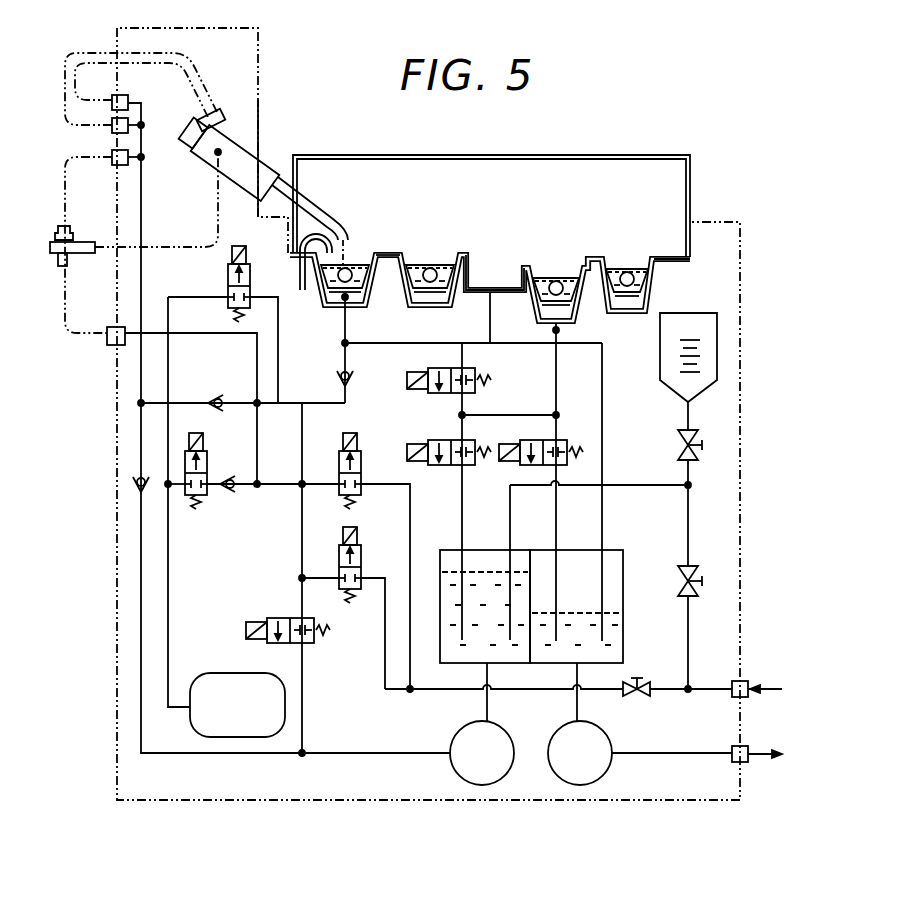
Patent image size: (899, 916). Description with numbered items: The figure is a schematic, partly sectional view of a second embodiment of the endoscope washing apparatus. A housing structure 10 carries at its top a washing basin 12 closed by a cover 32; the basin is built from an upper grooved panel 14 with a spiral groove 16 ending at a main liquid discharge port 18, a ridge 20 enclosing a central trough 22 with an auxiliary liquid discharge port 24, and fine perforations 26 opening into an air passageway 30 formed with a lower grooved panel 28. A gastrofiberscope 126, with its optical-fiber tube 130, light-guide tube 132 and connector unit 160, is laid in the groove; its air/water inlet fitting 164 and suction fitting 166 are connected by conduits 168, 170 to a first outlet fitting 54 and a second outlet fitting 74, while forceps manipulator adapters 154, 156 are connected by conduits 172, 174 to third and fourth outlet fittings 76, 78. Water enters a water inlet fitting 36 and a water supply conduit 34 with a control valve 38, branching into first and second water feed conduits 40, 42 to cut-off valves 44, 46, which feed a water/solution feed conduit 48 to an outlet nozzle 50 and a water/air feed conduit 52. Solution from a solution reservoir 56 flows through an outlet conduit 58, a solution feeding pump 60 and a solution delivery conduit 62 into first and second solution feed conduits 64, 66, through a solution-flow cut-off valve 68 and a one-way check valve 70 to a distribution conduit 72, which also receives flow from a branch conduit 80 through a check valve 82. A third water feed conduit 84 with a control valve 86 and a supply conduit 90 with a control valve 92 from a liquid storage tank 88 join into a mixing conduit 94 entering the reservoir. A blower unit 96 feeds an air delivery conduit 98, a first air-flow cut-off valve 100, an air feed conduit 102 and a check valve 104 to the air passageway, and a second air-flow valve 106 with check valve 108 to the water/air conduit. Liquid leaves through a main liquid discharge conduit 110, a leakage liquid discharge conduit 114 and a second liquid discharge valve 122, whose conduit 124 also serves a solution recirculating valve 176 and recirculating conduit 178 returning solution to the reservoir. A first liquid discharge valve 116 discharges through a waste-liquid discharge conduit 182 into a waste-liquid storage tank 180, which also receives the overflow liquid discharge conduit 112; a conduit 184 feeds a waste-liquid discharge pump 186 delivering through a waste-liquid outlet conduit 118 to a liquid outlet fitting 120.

The housing structure 10 is at (328, 800).
The washing basin 12 is at (606, 220).
The upper grooved panel 14 is at (682, 258).
The spiral groove 16 is at (416, 256).
The main liquid discharge port 18 is at (559, 330).
The ridge 20 is at (462, 255).
The central trough 22 is at (506, 288).
The auxiliary liquid discharge port 24 is at (483, 292).
The fine perforations 26 is at (410, 296).
The lower grooved panel 28 is at (343, 337).
The air passageway 30 is at (336, 304).
The cover 32 is at (589, 156).
The water supply conduit 34 is at (532, 690).
The water inlet fitting 36 is at (745, 682).
The manually-operated water-flow control valve 38 is at (636, 699).
The first water feed conduit 40 is at (384, 690).
The second water feed conduit 42 is at (410, 544).
The first solenoid-operated water-flow cut-off valve 44 is at (352, 598).
The second solenoid-operated water-flow cut-off valve 46 is at (361, 456).
The water/solution feed conduit 48 is at (300, 564).
The water/solution outlet nozzle 50 is at (288, 222).
The water/air feed conduit 52 is at (205, 336).
The first outlet fitting 54 is at (113, 347).
The solution reservoir 56 is at (443, 548).
The outlet conduit 58 is at (486, 716).
The solution feeding pump 60 is at (455, 768).
The solution delivery conduit 62 is at (356, 755).
The first solution feed conduit 64 is at (304, 700).
The second solution feed conduit 66 is at (195, 754).
The solenoid-operated solution-flow cut-off valve 68 is at (270, 617).
The one-way check valve 70 is at (133, 486).
The water/solution/air distribution conduit 72 is at (143, 212).
The second outlet fitting 74 is at (112, 160).
The third outlet fitting 76 is at (111, 127).
The fourth outlet fitting 78 is at (121, 96).
The branch conduit 80 is at (178, 403).
The one-way check valve 82 is at (219, 409).
The third water feed conduit 84 is at (689, 631).
The manually-operated water-flow control valve 86 is at (700, 578).
The liquid storage tank 88 is at (718, 347).
The supply conduit 90 is at (686, 406).
The manually-operated liquid-flow control valve 92 is at (679, 446).
The mixing conduit 94 is at (668, 488).
The blower unit 96 is at (225, 673).
The air delivery conduit 98 is at (170, 586).
The first solenoid-operated air-flow cut-off valve 100 is at (228, 278).
The air feed conduit 102 is at (278, 407).
The one-way check valve 104 is at (348, 382).
The second solenoid-operated air-flow cut-off valve 106 is at (206, 504).
The one-way check valve 108 is at (235, 490).
The main liquid discharge conduit 110 is at (556, 345).
The overflow liquid discharge conduit 112 is at (602, 386).
The leakage liquid discharge conduit 114 is at (346, 343).
The first solenoid-operated liquid discharge valve 116 is at (557, 442).
The waste-liquid outlet conduit 118 is at (657, 755).
The liquid outlet fitting 120 is at (746, 765).
The second solenoid-operated liquid discharge valve 122 is at (440, 394).
The conduit 124 is at (500, 415).
The two-channel gastrofiberscope 126 is at (262, 140).
The flexible optical-fiber tube 130 is at (344, 238).
The flexible light-guide tube 132 is at (214, 177).
The forceps manipulator adapter 154 is at (195, 122).
The forceps manipulator adapter 156 is at (216, 110).
The connector unit 160 is at (56, 232).
The air/water inlet fitting 164 is at (67, 263).
The suction fitting 166 is at (68, 230).
The conduit 168 is at (72, 334).
The conduit 170 is at (65, 165).
The conduit 172 is at (93, 62).
The conduit 174 is at (107, 50).
The solution recirculating valve 176 is at (464, 468).
The solution recirculating conduit 178 is at (463, 527).
The waste-liquid storage tank 180 is at (620, 590).
The waste-liquid discharge conduit 182 is at (545, 546).
The conduit 184 is at (577, 703).
The waste-liquid discharge pump 186 is at (560, 781).